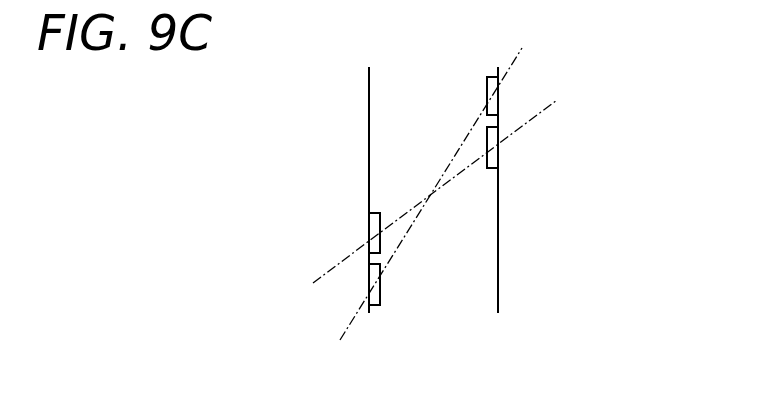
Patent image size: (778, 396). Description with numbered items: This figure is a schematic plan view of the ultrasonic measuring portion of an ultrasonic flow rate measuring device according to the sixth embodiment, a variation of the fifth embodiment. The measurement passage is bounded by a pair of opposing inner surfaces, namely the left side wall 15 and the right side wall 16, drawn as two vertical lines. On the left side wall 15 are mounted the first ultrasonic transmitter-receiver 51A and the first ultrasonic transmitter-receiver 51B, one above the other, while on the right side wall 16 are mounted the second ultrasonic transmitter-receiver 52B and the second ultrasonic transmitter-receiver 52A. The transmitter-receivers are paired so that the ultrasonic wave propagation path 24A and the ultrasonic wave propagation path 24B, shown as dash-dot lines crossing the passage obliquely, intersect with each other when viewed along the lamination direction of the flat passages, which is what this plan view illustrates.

The left side wall 15 is at (368, 107).
The right side wall 16 is at (499, 267).
The ultrasonic wave propagation path 24A is at (402, 213).
The ultrasonic wave propagation path 24B is at (404, 236).
The first ultrasonic transmitter-receiver 51A is at (372, 224).
The first ultrasonic transmitter-receiver 51B is at (381, 295).
The second ultrasonic transmitter-receiver 52A is at (499, 155).
The second ultrasonic transmitter-receiver 52B is at (499, 100).